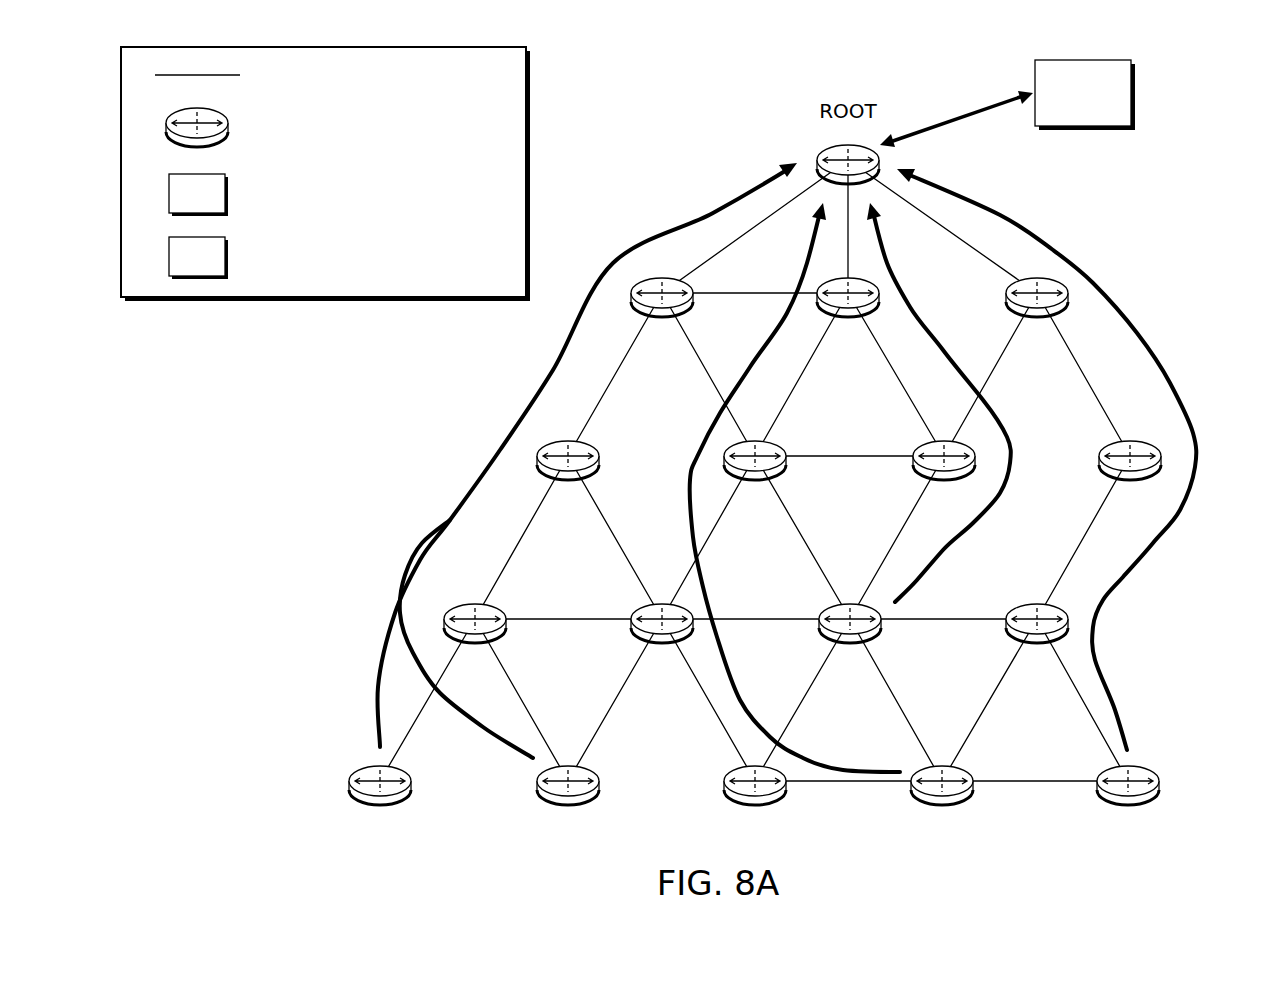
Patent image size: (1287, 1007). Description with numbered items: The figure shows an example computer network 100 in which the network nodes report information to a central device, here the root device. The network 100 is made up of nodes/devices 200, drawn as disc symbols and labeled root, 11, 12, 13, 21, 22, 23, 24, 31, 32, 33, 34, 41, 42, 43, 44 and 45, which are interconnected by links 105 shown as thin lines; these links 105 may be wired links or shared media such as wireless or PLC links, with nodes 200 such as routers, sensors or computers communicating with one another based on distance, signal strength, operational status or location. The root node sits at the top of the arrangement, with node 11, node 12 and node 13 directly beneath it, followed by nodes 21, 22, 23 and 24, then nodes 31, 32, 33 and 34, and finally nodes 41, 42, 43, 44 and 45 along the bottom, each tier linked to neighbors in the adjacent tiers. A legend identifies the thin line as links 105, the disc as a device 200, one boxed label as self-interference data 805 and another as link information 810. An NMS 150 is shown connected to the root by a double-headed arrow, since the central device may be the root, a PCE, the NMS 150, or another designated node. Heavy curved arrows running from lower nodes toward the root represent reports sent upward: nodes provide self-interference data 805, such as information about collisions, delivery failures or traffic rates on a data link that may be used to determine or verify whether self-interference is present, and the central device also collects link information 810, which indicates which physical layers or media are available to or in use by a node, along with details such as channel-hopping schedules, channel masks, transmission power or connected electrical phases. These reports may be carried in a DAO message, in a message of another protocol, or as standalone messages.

The computer network 100 is at (1215, 105).
The links 105 is at (642, 422).
The NMS 150 is at (1007, 103).
The nodes/devices 200 is at (277, 127).
The self-interference data 805 is at (492, 460).
The link information 810 is at (1105, 215).
The node 11 is at (662, 318).
The node 12 is at (848, 318).
The node 13 is at (1037, 318).
The node 21 is at (568, 481).
The node 22 is at (755, 481).
The node 23 is at (944, 481).
The node 24 is at (1130, 481).
The node 31 is at (475, 643).
The node 32 is at (662, 643).
The node 33 is at (850, 643).
The node 34 is at (1037, 643).
The node 41 is at (380, 805).
The node 42 is at (568, 805).
The node 43 is at (755, 805).
The node 44 is at (942, 805).
The node 45 is at (1128, 805).